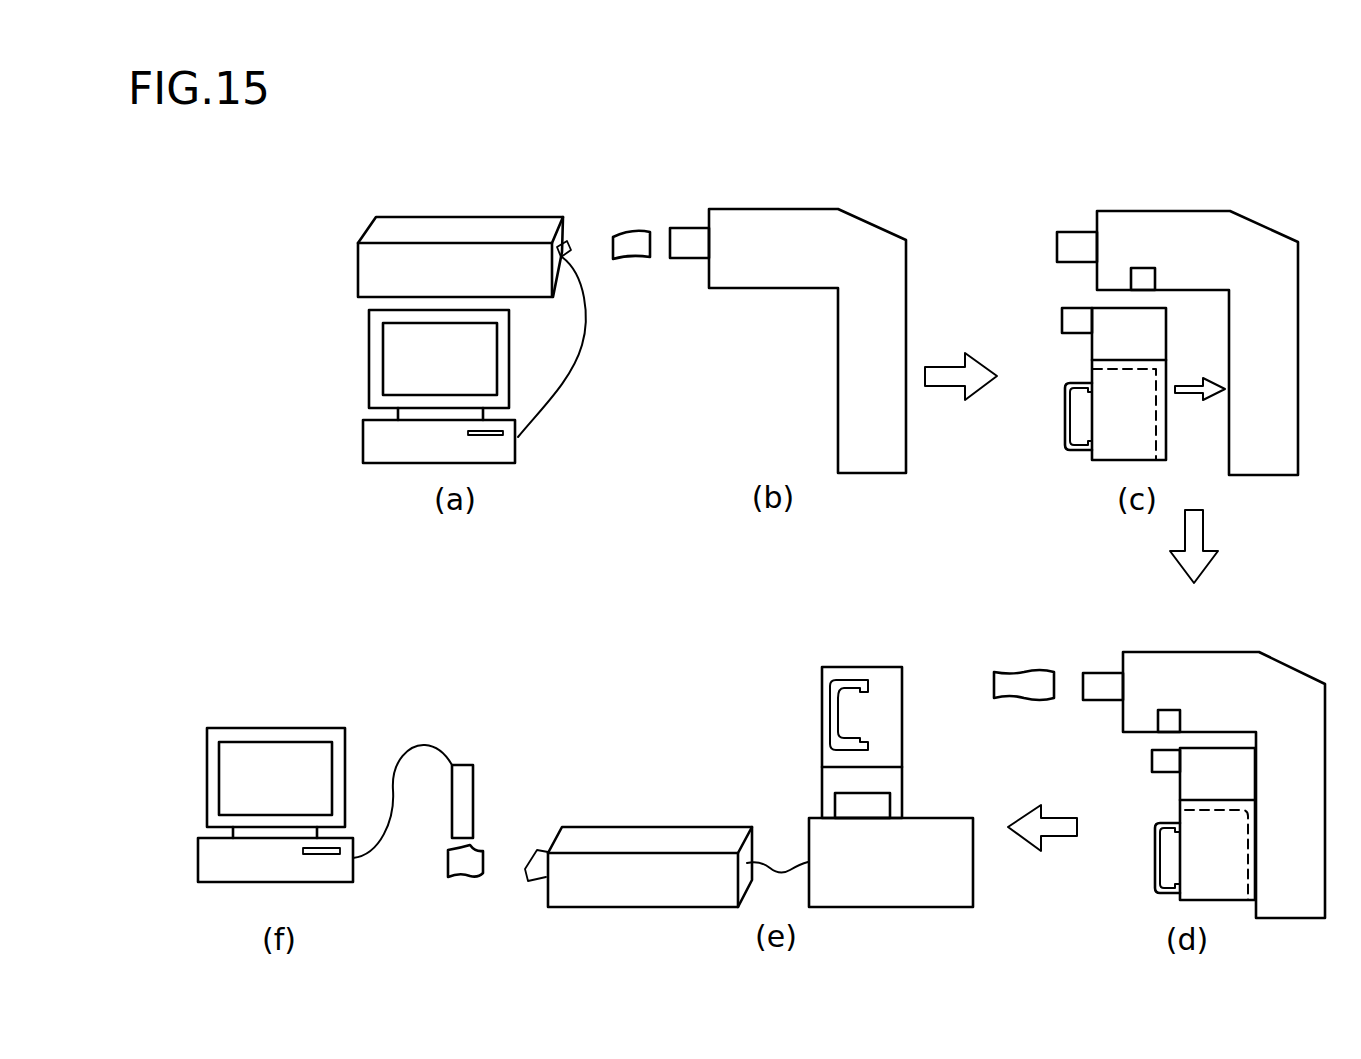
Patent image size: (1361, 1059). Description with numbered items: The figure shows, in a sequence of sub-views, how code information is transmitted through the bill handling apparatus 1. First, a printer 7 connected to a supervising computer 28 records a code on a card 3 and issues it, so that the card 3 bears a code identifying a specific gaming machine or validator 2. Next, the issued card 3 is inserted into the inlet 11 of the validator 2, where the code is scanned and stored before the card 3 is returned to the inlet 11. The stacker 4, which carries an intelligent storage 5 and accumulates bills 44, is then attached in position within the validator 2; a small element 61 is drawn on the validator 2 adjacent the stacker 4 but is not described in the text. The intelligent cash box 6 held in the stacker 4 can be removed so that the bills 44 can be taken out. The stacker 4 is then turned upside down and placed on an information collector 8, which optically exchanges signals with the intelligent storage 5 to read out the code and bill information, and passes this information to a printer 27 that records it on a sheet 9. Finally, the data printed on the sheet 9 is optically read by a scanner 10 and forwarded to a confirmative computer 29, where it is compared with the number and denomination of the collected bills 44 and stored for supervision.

The optical connector 1 is at (1250, 641).
The validator 2 is at (862, 233).
The card 3 is at (628, 253).
The stacker 4 is at (1047, 415).
The intelligent storage 5 is at (1062, 318).
The intelligent cash box 6 is at (1131, 426).
The printer 7 is at (522, 225).
The information collector 8 is at (947, 822).
The sheet 9 is at (462, 870).
The scanner 10 is at (457, 798).
The inlet 11 is at (681, 237).
The printer 27 is at (705, 832).
The supervising computer 28 is at (510, 453).
The confirmative computer 29 is at (325, 733).
The bills 44 is at (1022, 673).
The ferrule tag 61 is at (1150, 268).